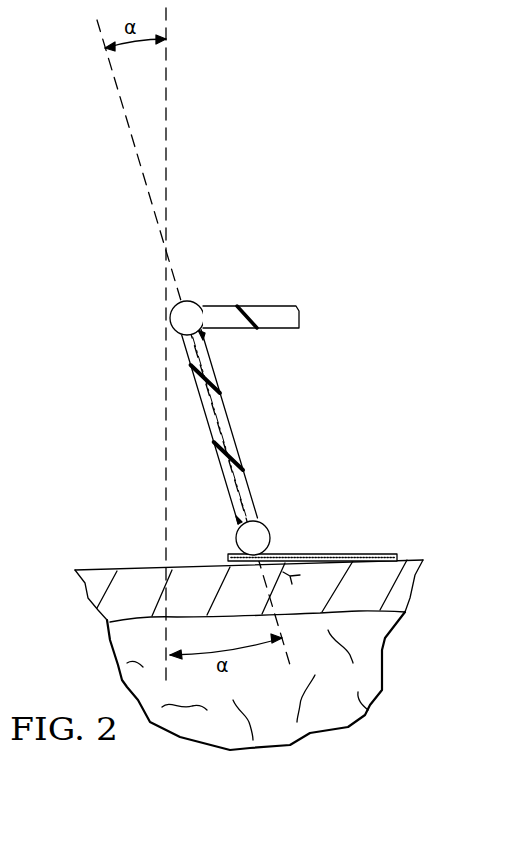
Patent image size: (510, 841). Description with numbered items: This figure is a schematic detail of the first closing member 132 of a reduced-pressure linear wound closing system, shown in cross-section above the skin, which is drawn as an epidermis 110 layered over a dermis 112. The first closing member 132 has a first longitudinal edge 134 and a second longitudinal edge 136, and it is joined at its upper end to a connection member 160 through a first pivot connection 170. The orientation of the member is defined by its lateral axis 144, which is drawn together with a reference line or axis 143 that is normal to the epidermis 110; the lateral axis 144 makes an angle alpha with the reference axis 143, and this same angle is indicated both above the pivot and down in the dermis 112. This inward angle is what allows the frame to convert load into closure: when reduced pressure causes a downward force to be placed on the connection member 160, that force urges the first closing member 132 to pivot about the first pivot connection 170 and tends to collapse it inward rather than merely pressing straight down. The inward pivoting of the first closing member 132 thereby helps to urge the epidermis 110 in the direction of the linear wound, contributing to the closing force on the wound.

The epidermis 110 is at (408, 597).
The dermis 112 is at (383, 665).
The first closing member 132 is at (230, 422).
The first longitudinal edge 134 is at (203, 338).
The second longitudinal edge 136 is at (258, 510).
The reference line or axis 143 is at (166, 118).
The lateral axis 144 is at (127, 126).
The connection member 160 is at (277, 306).
The first pivot connection 170 is at (190, 302).